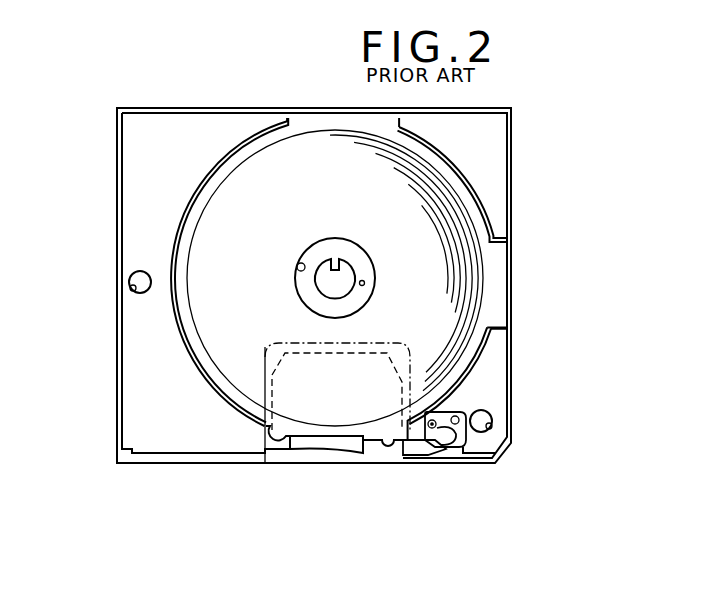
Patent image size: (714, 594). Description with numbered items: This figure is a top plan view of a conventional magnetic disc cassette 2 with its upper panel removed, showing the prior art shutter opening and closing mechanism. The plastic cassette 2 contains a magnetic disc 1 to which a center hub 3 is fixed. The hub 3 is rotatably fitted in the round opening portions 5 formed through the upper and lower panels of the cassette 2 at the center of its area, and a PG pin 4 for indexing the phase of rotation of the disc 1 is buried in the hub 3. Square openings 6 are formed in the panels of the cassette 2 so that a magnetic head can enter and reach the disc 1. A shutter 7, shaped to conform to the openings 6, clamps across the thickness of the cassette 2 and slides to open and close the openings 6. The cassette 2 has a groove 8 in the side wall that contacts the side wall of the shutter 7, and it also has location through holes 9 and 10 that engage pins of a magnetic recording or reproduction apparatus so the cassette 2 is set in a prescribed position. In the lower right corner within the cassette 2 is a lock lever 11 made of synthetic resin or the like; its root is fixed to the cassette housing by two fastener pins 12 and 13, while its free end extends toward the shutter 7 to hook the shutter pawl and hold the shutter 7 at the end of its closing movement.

The magnetic disc 1 is at (306, 147).
The magnetic disc cassette 2 is at (182, 133).
The center hub 3 is at (334, 258).
The PG pin 4 is at (366, 283).
The round opening portion 5 is at (298, 266).
The square opening 6 is at (303, 438).
The shutter 7 is at (262, 352).
The groove 8 is at (477, 458).
The location through hole 9 is at (492, 424).
The location through hole 10 is at (133, 288).
The lock lever 11 is at (434, 453).
The fastener pin 12 is at (436, 421).
The fastener pin 13 is at (460, 416).